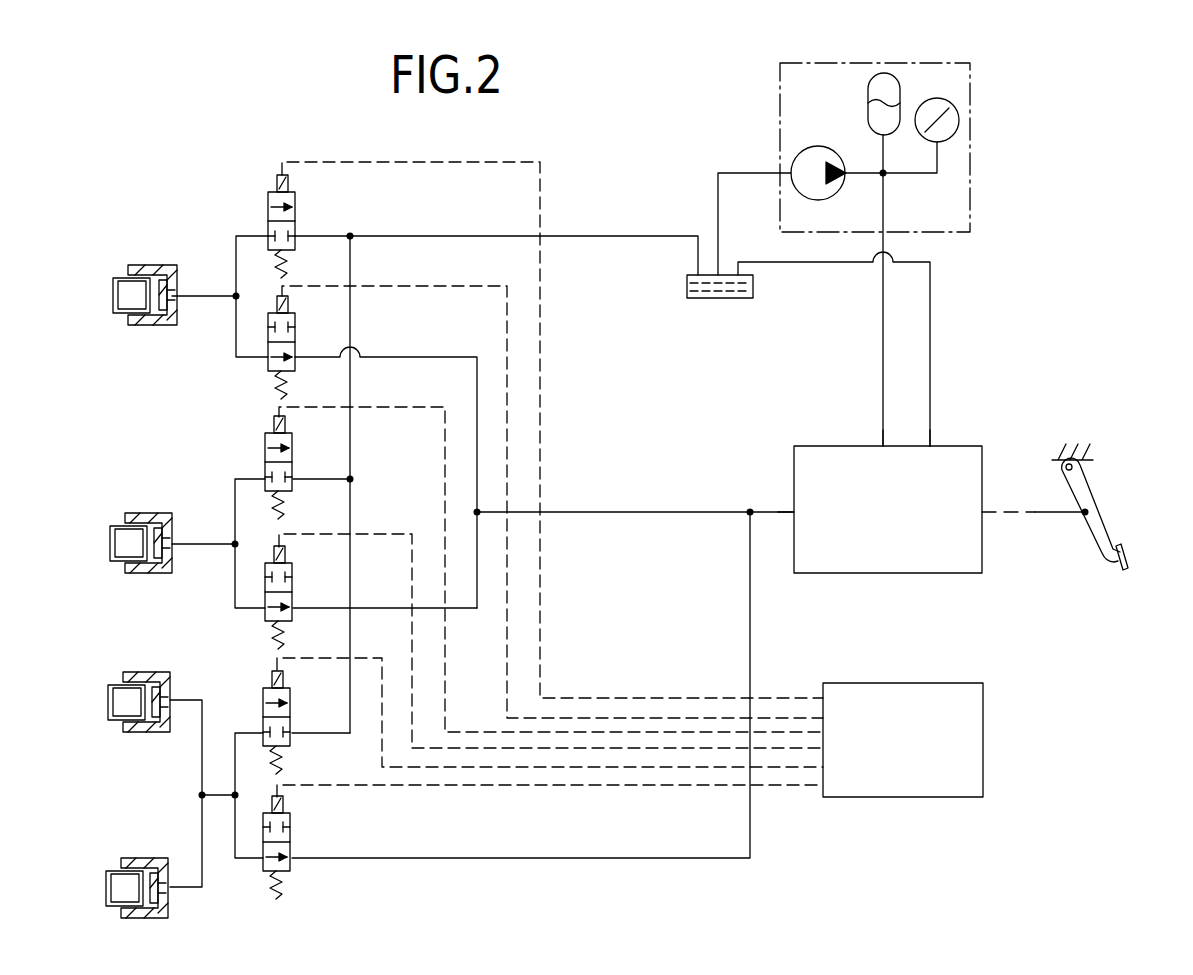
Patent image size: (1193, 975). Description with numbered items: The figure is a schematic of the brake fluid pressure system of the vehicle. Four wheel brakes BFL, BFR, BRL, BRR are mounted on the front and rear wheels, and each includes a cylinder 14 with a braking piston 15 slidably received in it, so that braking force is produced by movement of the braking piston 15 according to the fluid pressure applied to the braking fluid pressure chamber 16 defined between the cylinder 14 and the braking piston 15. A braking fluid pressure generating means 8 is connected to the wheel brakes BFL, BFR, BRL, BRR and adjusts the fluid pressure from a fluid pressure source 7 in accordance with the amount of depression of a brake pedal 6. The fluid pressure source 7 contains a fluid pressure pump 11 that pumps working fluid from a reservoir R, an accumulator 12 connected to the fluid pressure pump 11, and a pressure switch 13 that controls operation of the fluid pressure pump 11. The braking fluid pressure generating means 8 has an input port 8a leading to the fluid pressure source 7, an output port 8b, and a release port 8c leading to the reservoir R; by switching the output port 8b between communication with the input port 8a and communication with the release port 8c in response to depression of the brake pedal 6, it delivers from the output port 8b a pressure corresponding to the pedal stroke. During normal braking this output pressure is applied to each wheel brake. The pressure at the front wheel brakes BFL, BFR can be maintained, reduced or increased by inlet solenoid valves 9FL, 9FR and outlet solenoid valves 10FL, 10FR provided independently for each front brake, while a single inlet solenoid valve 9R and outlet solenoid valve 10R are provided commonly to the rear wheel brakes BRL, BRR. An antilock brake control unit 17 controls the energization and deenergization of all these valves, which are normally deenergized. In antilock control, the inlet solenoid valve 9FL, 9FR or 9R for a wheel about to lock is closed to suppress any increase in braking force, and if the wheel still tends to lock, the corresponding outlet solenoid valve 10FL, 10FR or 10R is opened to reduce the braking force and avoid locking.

The brake pedal 6 is at (1126, 553).
The fluid pressure source 7 is at (907, 128).
The braking fluid pressure generating means 8 is at (855, 508).
The input port 8a is at (884, 445).
The output port 8b is at (794, 510).
The release port 8c is at (934, 446).
The inlet solenoid valve 9FL is at (268, 373).
The inlet solenoid valve 9FR is at (265, 625).
The inlet solenoid valve 9R is at (293, 879).
The outlet solenoid valve 10FL is at (268, 205).
The outlet solenoid valve 10FR is at (265, 452).
The outlet solenoid valve 10R is at (293, 747).
The fluid pressure pump 11 is at (812, 146).
The accumulator 12 is at (901, 81).
The pressure switch 13 is at (937, 143).
The cylinder 14 is at (162, 265).
The braking piston 15 is at (115, 320).
The braking fluid pressure chamber 16 is at (172, 290).
The antilock brake control unit 17 is at (983, 712).
The reservoir R is at (687, 285).
The wheel brake BFL is at (149, 292).
The wheel brake BFR is at (136, 510).
The wheel brake BRL is at (122, 672).
The wheel brake BRR is at (109, 881).